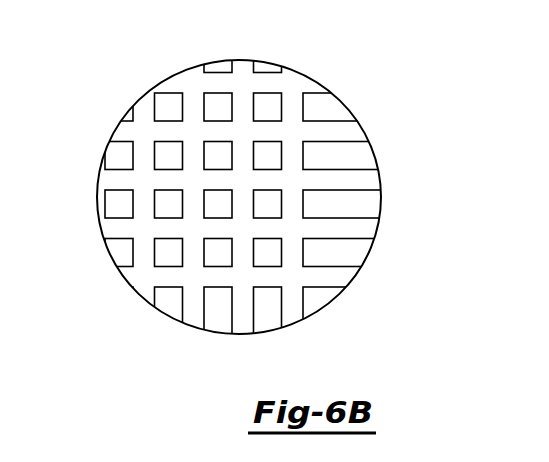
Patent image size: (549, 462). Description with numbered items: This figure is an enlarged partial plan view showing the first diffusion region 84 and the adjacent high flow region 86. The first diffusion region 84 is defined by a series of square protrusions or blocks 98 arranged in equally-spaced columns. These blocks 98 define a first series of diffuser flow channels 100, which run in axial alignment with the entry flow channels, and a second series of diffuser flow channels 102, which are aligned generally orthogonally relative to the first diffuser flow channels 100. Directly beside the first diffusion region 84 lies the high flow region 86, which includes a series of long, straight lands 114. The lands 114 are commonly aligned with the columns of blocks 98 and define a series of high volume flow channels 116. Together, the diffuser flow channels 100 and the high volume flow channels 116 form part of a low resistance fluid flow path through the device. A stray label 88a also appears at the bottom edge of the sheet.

The first diffusion region 84 is at (184, 80).
The high flow region 86 is at (352, 104).
The blocks 98 is at (218, 102).
The first diffuser flow channels 100 is at (222, 179).
The second diffuser flow channels 102 is at (240, 326).
The lands 114 is at (348, 108).
The high volume flow channels 116 is at (320, 135).
The housing portion 88a is at (131, 450).